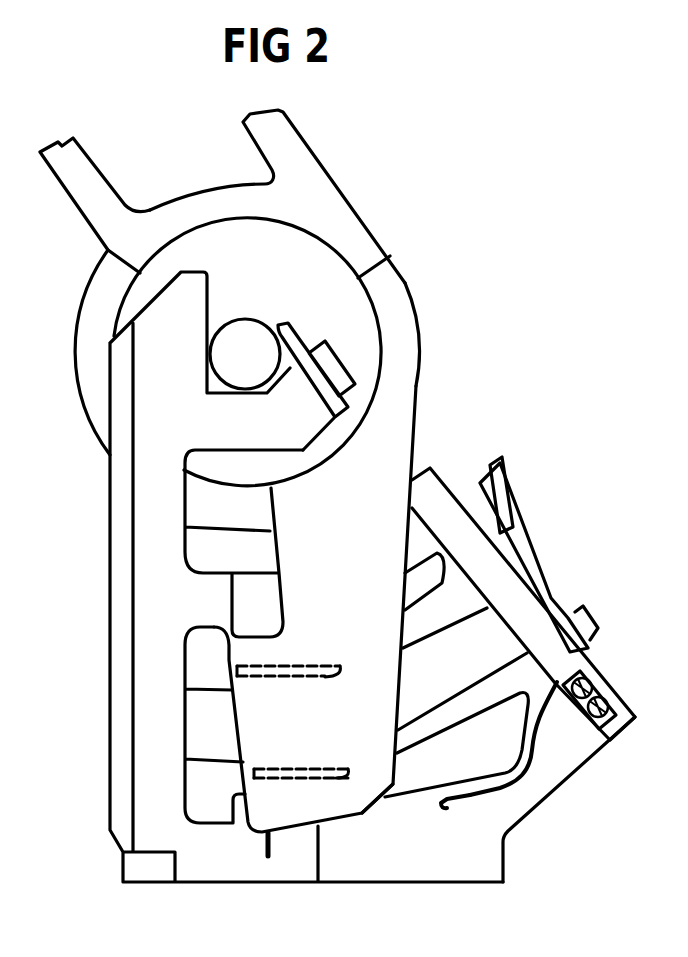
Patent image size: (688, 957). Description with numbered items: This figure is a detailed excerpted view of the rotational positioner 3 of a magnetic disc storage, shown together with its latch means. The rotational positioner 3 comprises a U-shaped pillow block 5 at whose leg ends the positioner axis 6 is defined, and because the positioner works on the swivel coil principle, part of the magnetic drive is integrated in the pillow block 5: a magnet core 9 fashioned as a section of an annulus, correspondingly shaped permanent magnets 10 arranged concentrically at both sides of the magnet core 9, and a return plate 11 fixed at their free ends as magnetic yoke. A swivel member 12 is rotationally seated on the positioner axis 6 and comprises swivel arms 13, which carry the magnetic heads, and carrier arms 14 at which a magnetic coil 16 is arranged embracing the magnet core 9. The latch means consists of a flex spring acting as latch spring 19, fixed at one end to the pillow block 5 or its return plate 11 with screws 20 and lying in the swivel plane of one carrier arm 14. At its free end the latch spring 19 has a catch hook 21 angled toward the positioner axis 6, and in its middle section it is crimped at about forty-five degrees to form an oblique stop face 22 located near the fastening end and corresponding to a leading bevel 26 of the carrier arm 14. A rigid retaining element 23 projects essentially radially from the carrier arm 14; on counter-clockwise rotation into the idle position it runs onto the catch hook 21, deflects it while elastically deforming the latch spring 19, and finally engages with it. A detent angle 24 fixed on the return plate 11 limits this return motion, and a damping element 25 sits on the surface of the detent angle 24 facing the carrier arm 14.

The rotational positioner 3 is at (352, 188).
The pillow block 5 is at (142, 518).
The positioner axis 6 is at (247, 352).
The magnet core 9 is at (203, 720).
The permanent magnets 10 is at (223, 638).
The return plate 11 is at (437, 510).
The swivel member 12 is at (355, 325).
The swivel arms 13 is at (58, 180).
The carrier arms 14 is at (387, 457).
The magnetic coil 16 is at (293, 765).
The latch spring 19 is at (475, 797).
The screws 20 is at (612, 683).
The catch hook 21 is at (440, 800).
The stop face 22 is at (565, 770).
The retaining element 23 is at (266, 840).
The detent angle 24 is at (538, 572).
The damping element 25 is at (497, 507).
The leading bevel 26 is at (372, 806).